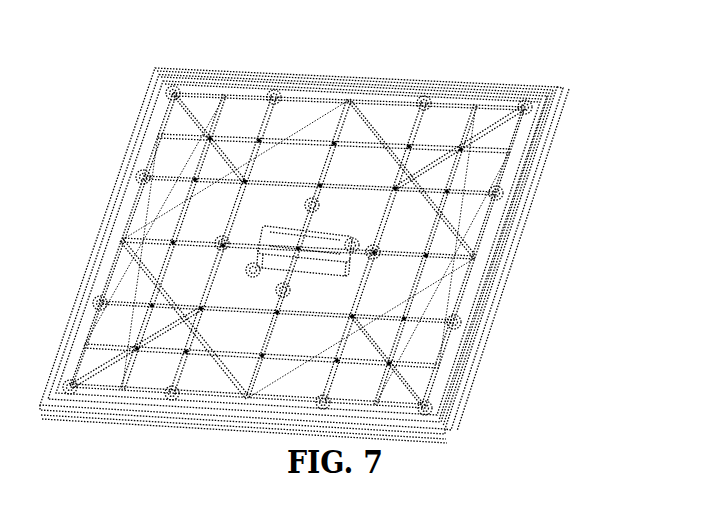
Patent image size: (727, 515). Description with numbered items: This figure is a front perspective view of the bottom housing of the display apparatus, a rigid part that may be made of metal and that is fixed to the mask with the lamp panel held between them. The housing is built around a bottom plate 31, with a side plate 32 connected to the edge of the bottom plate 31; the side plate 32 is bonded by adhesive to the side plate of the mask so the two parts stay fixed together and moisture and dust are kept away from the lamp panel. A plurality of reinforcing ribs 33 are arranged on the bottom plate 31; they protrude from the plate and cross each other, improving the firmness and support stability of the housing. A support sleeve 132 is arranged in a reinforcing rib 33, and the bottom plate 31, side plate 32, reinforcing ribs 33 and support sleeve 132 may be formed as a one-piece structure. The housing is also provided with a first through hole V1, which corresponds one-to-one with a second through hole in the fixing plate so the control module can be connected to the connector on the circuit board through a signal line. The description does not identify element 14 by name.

The tray body 14 is at (513, 213).
The bottom plate 31 is at (291, 108).
The side plate 32 is at (417, 84).
The support sleeve 132 is at (527, 100).
The reinforcing ribs 33 is at (540, 137).
The first through hole V1 is at (352, 253).